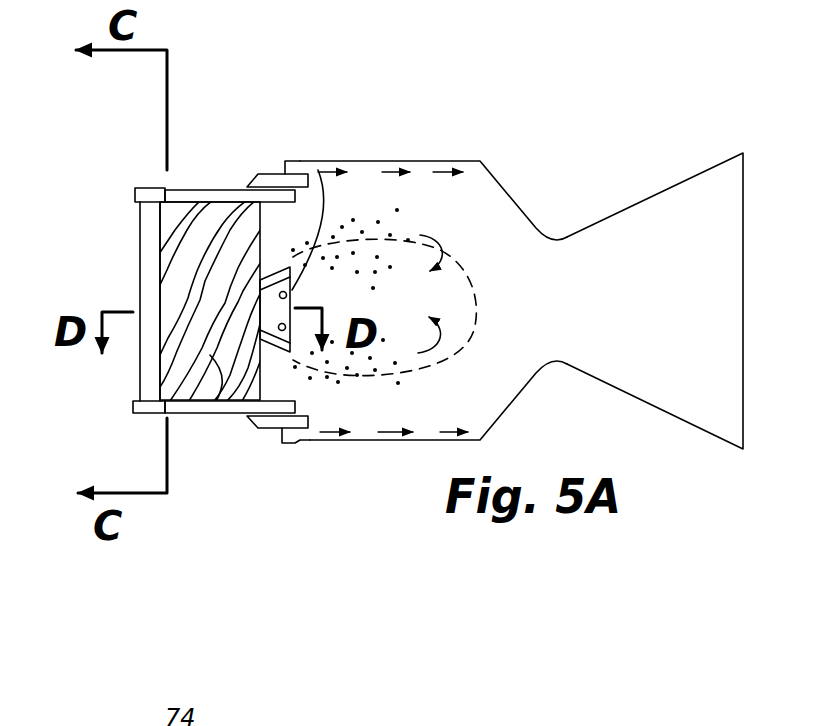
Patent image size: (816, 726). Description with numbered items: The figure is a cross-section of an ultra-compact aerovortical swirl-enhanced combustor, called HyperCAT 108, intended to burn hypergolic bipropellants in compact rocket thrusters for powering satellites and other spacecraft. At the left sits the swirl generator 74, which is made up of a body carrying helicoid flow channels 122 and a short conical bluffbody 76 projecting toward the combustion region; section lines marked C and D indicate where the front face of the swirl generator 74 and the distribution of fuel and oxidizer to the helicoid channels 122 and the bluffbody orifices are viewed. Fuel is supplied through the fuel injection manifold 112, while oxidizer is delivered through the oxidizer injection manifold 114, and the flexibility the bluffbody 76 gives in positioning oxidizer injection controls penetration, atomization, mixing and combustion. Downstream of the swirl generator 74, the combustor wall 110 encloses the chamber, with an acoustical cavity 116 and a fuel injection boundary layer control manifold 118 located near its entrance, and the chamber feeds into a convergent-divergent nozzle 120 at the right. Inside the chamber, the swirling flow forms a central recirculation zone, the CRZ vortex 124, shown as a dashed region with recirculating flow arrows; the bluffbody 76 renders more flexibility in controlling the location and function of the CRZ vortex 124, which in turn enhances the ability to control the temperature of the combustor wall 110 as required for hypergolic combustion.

The swirl generator 74 is at (174, 206).
The bluffbody 76 is at (265, 315).
The HyperCAT 108 is at (136, 136).
The combustor wall 110 is at (418, 161).
The fuel injection manifold 112 is at (152, 418).
The oxidizer injection manifold 114 is at (289, 161).
The acoustical cavity 116 is at (252, 180).
The fuel injection boundary layer control manifold 118 is at (285, 165).
The convergent-divergent nozzle 120 is at (603, 237).
The helicoid flow channels 122 is at (248, 358).
The CRZ vortex 124 is at (477, 293).